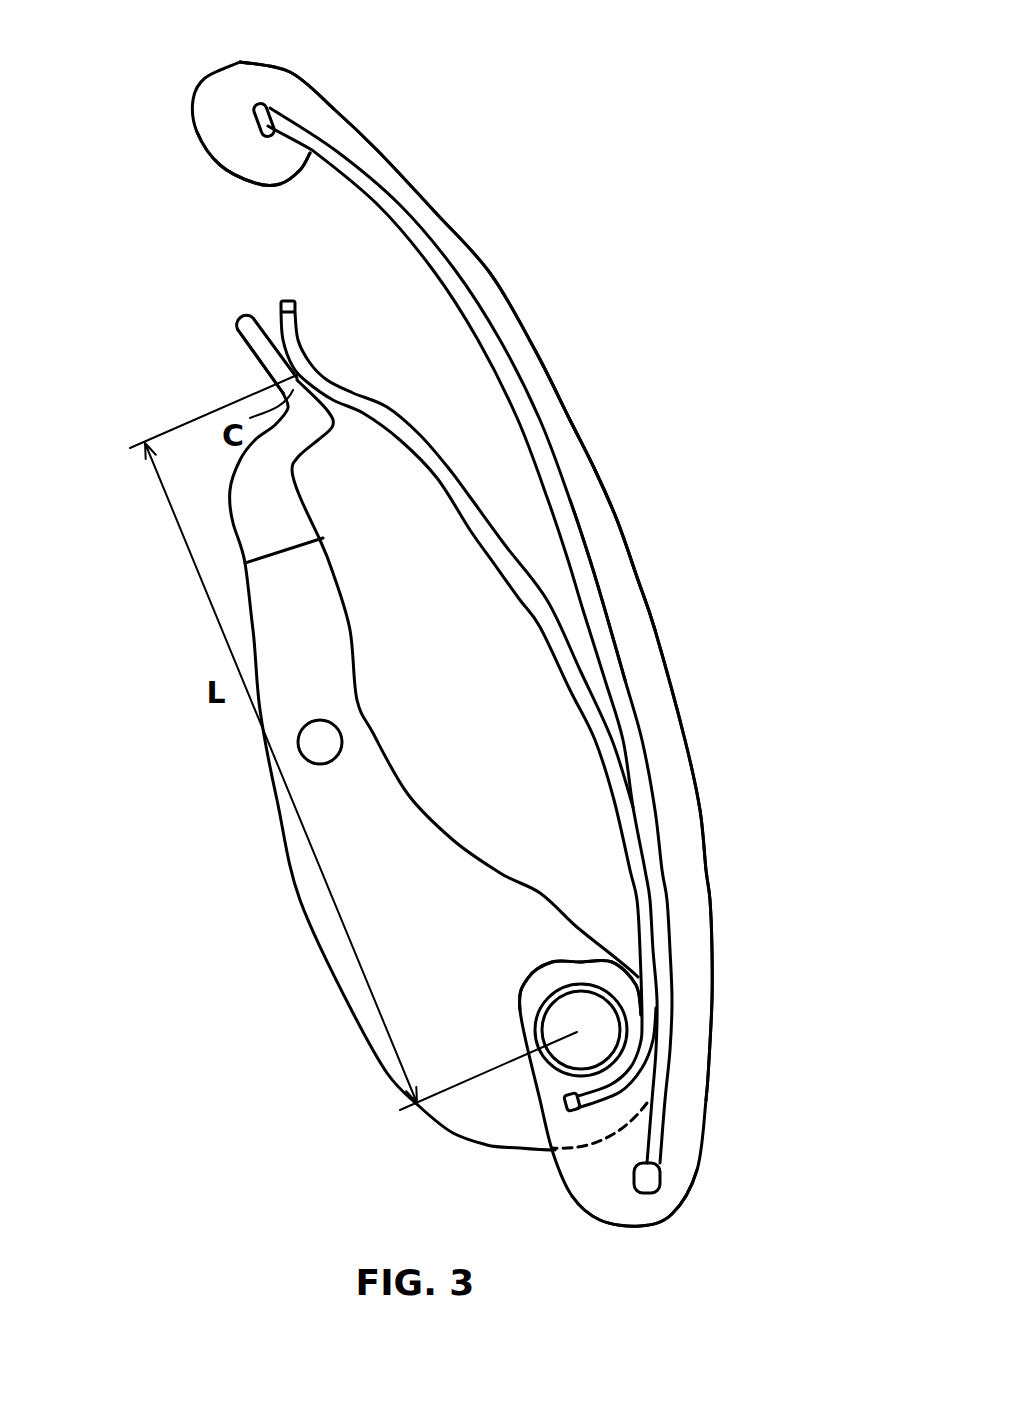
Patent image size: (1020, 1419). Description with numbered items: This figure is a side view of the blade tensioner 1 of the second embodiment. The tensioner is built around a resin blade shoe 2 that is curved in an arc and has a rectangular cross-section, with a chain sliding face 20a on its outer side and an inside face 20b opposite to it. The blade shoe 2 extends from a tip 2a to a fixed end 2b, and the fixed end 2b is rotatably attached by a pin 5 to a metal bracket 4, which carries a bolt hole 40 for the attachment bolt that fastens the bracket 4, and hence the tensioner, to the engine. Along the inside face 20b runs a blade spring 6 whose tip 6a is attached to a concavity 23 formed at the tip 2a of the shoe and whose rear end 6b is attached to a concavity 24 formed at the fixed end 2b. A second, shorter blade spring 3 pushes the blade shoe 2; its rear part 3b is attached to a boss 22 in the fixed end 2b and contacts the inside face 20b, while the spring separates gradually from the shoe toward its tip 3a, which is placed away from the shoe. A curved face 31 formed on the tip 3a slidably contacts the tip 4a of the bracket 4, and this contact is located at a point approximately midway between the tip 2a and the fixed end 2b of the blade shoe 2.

The blade tensioner 1 is at (624, 363).
The blade shoe 2 is at (608, 474).
The tip of blade shoe 2a is at (218, 73).
The fixed end of blade shoe 2b is at (603, 1210).
The blade spring 3 is at (464, 544).
The tip of blade spring 3a is at (283, 300).
The rear part of blade spring 3b is at (590, 1103).
The bracket 4 is at (286, 912).
The tip of bracket 4a is at (232, 335).
The pin 5 is at (613, 1035).
The blade spring 6 is at (462, 350).
The tip of blade spring 6a is at (287, 120).
The rear end of blade spring 6b is at (657, 1167).
The chain sliding face 20a is at (630, 556).
The inside face 20b is at (612, 630).
The boss 22 is at (550, 1100).
The concavity 23 is at (268, 133).
The concavity 24 is at (648, 1190).
The curved face 31 is at (275, 318).
The bolt hole 40 is at (333, 731).